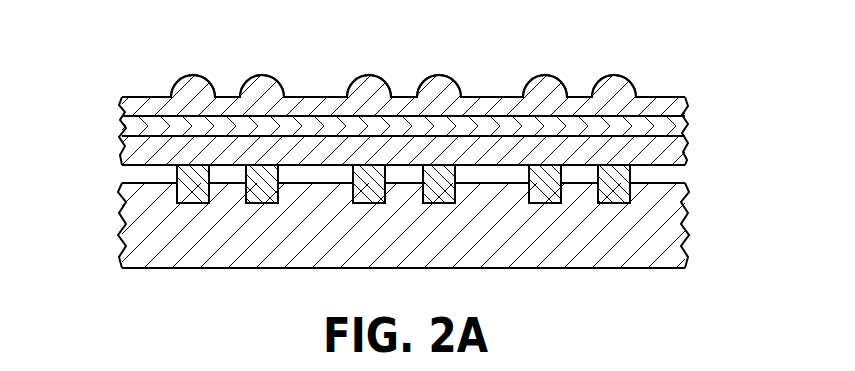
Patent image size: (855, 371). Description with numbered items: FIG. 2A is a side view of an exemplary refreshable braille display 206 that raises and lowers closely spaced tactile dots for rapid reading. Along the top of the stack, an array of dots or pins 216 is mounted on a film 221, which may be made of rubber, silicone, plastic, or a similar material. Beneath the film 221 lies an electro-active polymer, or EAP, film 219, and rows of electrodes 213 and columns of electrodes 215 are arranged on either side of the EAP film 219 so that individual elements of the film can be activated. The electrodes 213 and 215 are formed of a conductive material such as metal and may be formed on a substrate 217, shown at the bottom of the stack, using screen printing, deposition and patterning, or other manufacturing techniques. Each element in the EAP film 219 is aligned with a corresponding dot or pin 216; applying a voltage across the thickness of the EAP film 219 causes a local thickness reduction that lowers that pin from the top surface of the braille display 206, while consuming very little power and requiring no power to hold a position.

The braille display 206 is at (651, 73).
The rows of electrodes 213 is at (122, 122).
The columns of electrodes 215 is at (192, 205).
The dots or pins 216 is at (193, 74).
The substrate 217 is at (122, 232).
The EAP film 219 is at (687, 152).
The film 221 is at (687, 109).